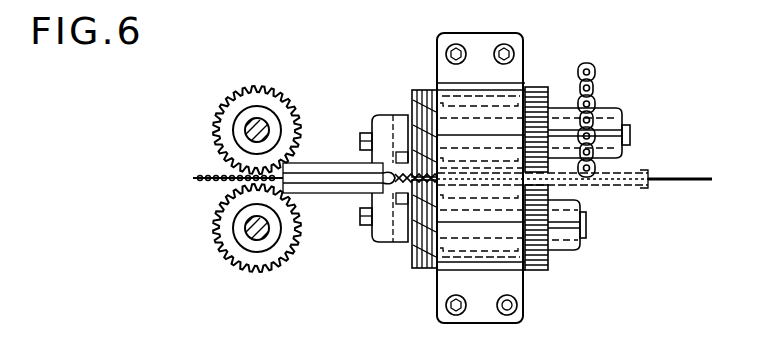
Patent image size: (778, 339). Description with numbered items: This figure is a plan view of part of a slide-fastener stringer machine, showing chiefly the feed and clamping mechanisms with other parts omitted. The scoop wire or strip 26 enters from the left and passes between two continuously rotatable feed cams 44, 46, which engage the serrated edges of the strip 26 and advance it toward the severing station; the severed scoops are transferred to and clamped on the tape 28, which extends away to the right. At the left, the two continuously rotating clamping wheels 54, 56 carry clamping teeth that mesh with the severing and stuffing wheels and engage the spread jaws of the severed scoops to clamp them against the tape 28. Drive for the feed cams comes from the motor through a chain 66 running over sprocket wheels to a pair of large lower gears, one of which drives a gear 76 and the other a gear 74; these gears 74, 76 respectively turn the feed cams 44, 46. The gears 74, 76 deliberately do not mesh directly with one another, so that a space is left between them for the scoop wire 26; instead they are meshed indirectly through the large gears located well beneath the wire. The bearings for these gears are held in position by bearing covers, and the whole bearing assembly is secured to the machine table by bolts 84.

The clamping wheel 56 is at (250, 94).
The clamping wheel 54 is at (266, 258).
The feed cam 46 is at (425, 91).
The feed cam 44 is at (430, 268).
The gear 76 is at (538, 86).
The gear 74 is at (550, 265).
The chain 66 is at (597, 86).
The strip 26 is at (640, 172).
The tape 28 is at (702, 182).
The bolt 84 is at (517, 305).